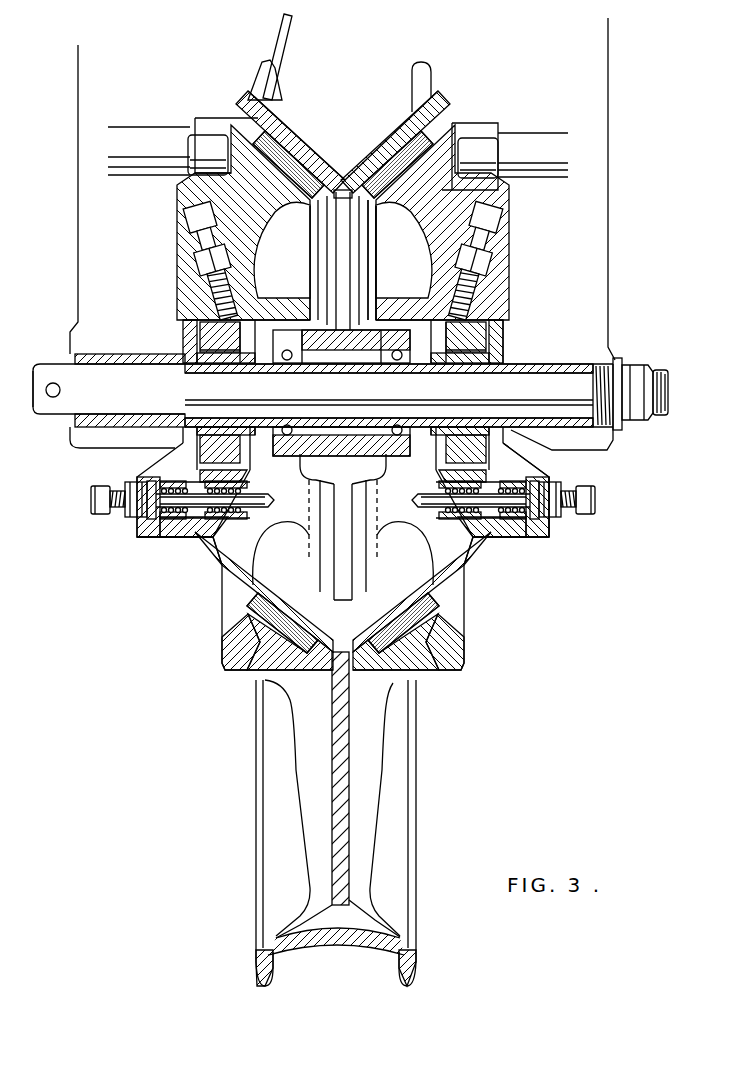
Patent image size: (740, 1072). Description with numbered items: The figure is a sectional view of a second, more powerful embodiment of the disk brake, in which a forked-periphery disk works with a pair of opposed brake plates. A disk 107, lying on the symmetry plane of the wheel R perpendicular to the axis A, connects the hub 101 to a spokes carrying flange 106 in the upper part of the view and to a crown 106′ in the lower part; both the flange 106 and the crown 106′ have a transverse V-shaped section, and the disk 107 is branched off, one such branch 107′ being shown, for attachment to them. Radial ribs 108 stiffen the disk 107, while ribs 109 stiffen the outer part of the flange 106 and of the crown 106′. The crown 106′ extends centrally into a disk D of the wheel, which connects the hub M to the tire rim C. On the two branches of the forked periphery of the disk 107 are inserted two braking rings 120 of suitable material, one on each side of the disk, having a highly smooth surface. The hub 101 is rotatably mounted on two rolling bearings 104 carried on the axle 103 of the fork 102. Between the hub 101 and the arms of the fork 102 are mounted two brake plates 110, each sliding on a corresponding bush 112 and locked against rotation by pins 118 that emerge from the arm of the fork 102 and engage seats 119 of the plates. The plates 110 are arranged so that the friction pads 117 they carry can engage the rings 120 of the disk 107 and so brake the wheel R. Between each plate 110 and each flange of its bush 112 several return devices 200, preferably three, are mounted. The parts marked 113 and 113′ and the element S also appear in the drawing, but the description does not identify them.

The hub 101 is at (323, 345).
The fork 102 is at (96, 290).
The axle 103 is at (580, 380).
The rolling bearings 104 is at (288, 360).
The spokes carrying flange 106 is at (302, 133).
The crown 106′ is at (305, 640).
The disk 107 is at (372, 293).
The branch of the disk 107′ is at (345, 195).
The radial ribs 108 is at (310, 316).
The ribs 109 is at (340, 125).
The brake plates 110 is at (226, 202).
The bush 112 is at (233, 364).
The arm 113 is at (183, 372).
The arm 113′ is at (548, 540).
The friction pads 117 is at (262, 142).
The pins 118 is at (482, 148).
The seats 119 is at (466, 132).
The braking rings 120 is at (378, 130).
The return devices 200 is at (193, 548).
The lever S is at (280, 50).
The axis A is at (100, 385).
The hub M is at (115, 532).
The wheel R is at (493, 704).
The disk of the wheel D is at (346, 725).
The tire rim C is at (378, 940).